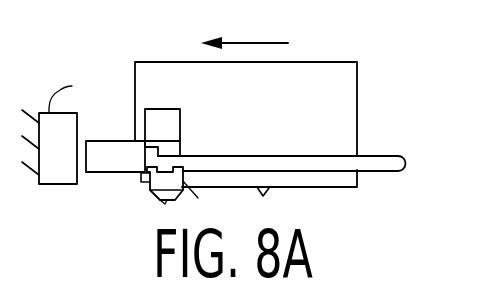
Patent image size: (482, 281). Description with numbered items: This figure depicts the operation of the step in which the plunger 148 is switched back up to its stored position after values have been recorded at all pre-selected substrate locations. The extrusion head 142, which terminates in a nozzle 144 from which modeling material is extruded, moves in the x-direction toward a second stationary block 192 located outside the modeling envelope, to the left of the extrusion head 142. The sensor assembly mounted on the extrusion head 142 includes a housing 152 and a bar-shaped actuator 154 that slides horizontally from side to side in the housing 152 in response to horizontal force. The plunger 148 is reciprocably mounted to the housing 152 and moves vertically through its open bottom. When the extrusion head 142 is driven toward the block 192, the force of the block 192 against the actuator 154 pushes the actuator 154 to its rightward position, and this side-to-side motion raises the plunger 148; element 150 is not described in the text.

The extrusion head 142 is at (333, 83).
The nozzle 144 is at (265, 193).
The plunger 148 is at (162, 204).
The latch body 150 is at (208, 199).
The housing 152 is at (168, 124).
The actuator 154 is at (110, 150).
The second stationary block 192 is at (79, 93).